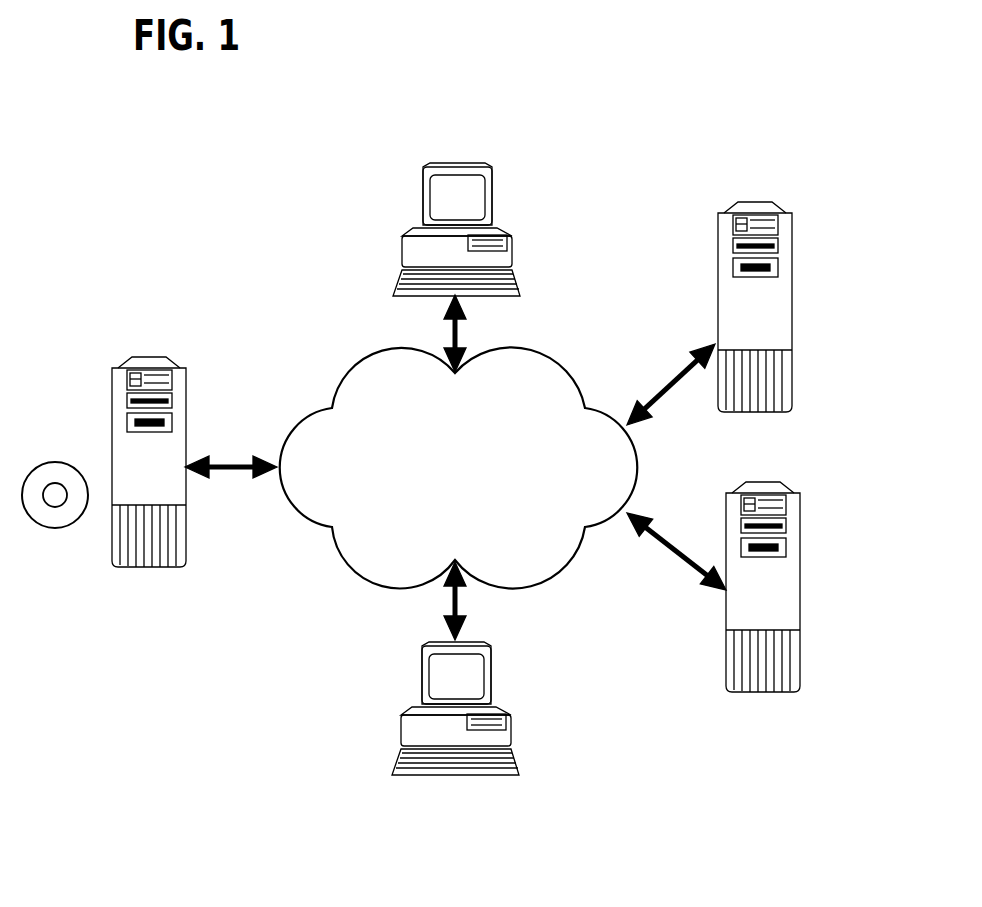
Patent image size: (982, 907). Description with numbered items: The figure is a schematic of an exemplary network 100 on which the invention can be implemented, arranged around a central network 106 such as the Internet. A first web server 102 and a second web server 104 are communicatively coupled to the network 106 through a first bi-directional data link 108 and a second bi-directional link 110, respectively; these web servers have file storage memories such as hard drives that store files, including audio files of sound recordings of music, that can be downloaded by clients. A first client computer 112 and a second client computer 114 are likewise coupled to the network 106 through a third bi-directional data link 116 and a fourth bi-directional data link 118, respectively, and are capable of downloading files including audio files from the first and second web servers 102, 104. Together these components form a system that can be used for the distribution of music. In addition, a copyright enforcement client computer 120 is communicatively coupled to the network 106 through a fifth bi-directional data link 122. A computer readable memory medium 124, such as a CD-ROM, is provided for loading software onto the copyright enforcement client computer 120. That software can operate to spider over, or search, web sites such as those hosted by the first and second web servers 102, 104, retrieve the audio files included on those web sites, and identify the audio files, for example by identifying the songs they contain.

The network 100 is at (480, 118).
The first web server 102 is at (788, 213).
The second web server 104 is at (797, 494).
The network 106 is at (567, 327).
The first bi-directional data link 108 is at (690, 365).
The second bi-directional link 110 is at (668, 555).
The first client computer 112 is at (491, 672).
The second client computer 114 is at (492, 193).
The third bi-directional data link 116 is at (467, 622).
The fourth bi-directional data link 118 is at (463, 342).
The copyright enforcement client computer 120 is at (148, 355).
The fifth bi-directional data link 122 is at (217, 460).
The computer readable memory medium 124 is at (55, 532).